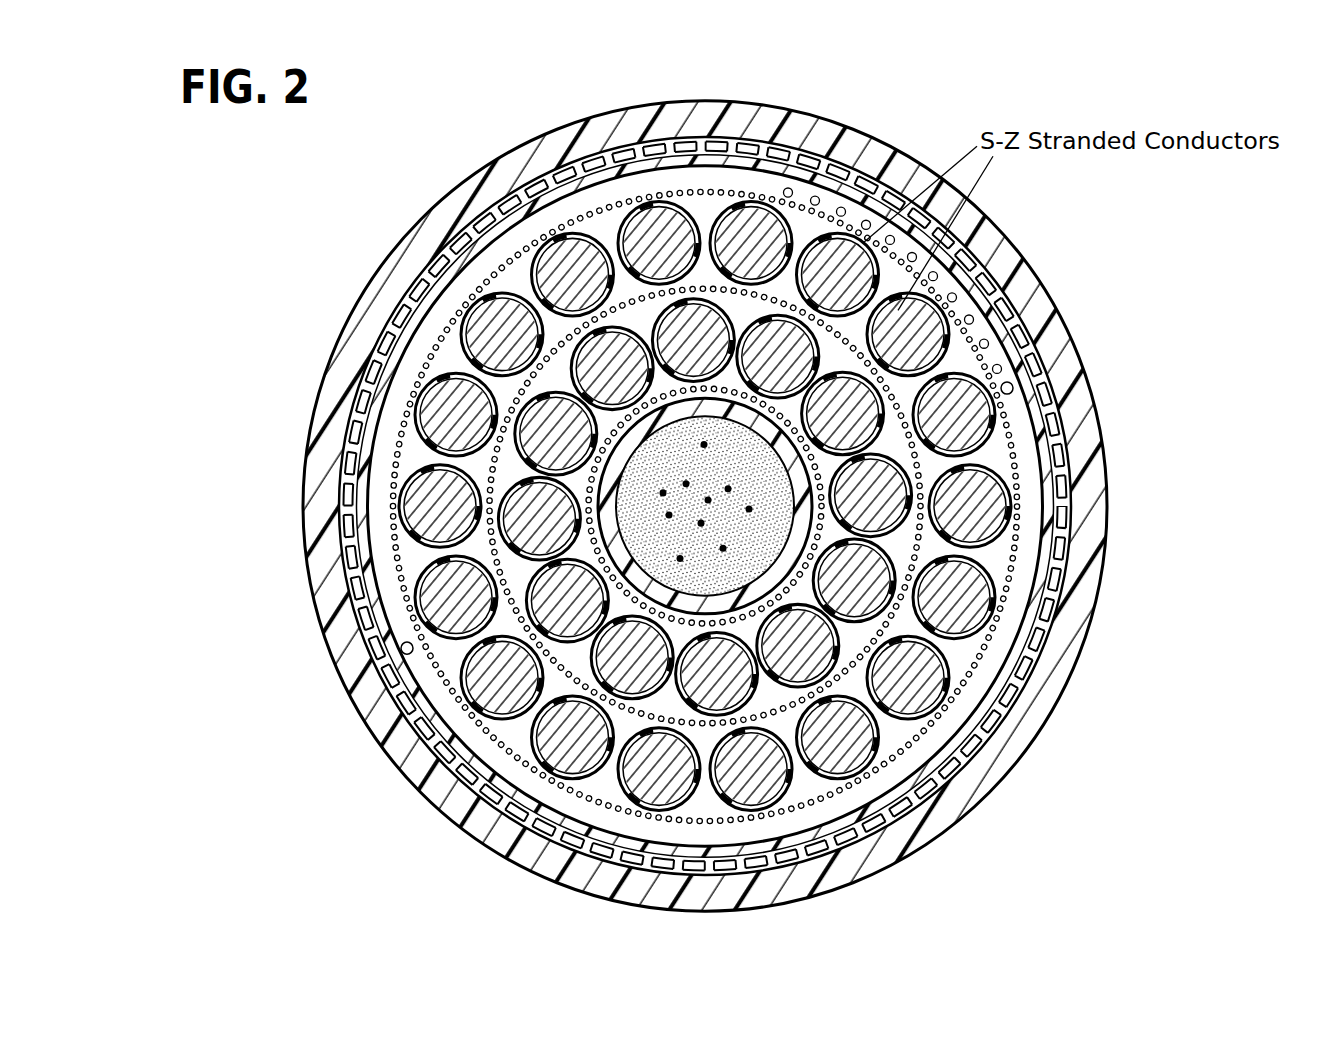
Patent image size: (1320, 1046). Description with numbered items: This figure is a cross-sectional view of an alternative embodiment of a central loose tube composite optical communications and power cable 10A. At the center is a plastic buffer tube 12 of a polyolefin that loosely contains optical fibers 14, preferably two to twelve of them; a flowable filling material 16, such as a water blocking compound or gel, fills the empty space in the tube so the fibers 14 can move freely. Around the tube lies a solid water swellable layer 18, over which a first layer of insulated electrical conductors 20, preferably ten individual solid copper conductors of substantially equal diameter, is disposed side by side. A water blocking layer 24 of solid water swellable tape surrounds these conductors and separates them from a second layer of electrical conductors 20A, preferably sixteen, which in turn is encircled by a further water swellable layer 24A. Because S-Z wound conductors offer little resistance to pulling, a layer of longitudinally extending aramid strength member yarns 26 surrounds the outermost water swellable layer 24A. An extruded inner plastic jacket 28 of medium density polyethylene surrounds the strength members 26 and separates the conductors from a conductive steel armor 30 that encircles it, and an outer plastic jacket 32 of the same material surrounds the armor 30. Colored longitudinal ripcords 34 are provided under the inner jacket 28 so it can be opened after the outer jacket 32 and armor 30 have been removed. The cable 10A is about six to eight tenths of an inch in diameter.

The composite cable 10A is at (898, 141).
The central buffer tube 12 is at (786, 455).
The optical fibers 14 is at (725, 547).
The flowable filling material 16 is at (680, 472).
The water swellable layer 18 is at (598, 518).
The electrical conductors 20 is at (482, 676).
The second layer of electrical conductors 20A is at (425, 511).
The water blocking layer 24 is at (490, 401).
The water swellable layer 24A is at (428, 348).
The strength members 26 is at (940, 278).
The inner plastic jacket 28 is at (1042, 602).
The conductive armor 30 is at (1062, 540).
The outer plastic jacket 32 is at (402, 250).
The ripcords 34 is at (400, 649).